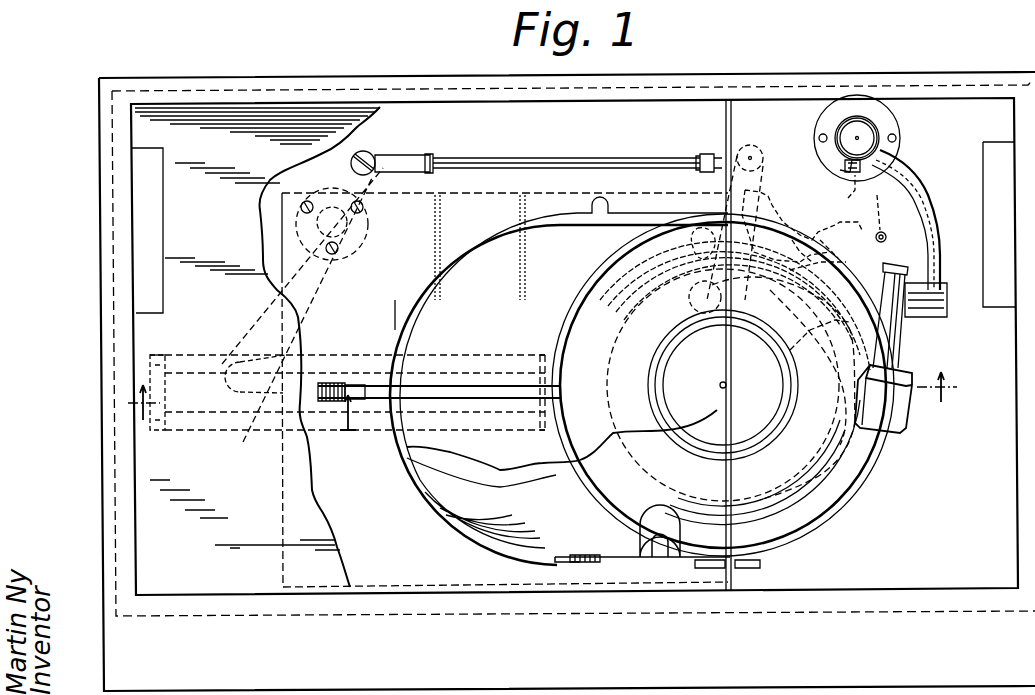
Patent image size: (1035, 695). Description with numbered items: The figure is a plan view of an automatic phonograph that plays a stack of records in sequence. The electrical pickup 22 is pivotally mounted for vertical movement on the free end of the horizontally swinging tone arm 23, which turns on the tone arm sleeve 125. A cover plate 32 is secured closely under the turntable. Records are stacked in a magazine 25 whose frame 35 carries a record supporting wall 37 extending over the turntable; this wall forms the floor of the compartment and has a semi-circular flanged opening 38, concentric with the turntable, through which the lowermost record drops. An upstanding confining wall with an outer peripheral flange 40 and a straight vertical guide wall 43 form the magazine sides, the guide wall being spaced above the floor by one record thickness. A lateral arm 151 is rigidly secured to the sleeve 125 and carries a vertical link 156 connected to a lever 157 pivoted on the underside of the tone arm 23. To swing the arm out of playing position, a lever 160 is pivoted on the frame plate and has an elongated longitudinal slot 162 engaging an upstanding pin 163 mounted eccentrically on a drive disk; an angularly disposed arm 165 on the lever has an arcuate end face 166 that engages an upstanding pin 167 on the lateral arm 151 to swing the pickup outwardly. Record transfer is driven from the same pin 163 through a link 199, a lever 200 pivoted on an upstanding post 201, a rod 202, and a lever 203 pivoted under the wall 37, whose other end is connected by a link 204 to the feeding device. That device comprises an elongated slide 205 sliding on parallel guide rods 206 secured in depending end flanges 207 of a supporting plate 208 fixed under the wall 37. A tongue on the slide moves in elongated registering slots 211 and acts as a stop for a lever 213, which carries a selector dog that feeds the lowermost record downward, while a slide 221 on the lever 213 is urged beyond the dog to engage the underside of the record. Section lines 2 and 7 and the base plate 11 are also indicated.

The section line 2 is at (136, 402).
The section line 7 is at (648, 414).
The base plate 11 is at (333, 568).
The electrical pickup 22 is at (893, 395).
The tone arm 23 is at (940, 256).
The magazine 25 is at (480, 249).
The cover plate 32 is at (949, 106).
The frame 35 is at (493, 199).
The record supporting wall 37 is at (550, 233).
The semi-circular flanged opening 38 is at (602, 281).
The outer peripheral flange 40 is at (402, 316).
The straight vertical guide wall 43 is at (735, 577).
The tone arm sleeve 125 is at (862, 122).
The lateral arm 151 is at (848, 198).
The vertical link 156 is at (845, 182).
The lever 157 is at (908, 318).
The lever 160 is at (835, 430).
The elongated longitudinal slot 162 is at (825, 265).
The upstanding pin 163 is at (833, 345).
The angularly disposed arm 165 is at (800, 243).
The arcuate end face 166 is at (818, 238).
The upstanding pin 167 is at (876, 238).
The link 199 is at (775, 325).
The lever 200 is at (802, 226).
The upstanding post 201 is at (705, 250).
The rod 202 is at (672, 160).
The lever 203 is at (348, 175).
The link 204 is at (302, 312).
The elongated slide 205 is at (238, 355).
The parallel guide rods 206 is at (198, 413).
The depending end flanges 207 is at (148, 385).
The supporting plate 208 is at (491, 355).
The elongated registering slots 211 is at (455, 384).
The lever 213 is at (362, 382).
The slide 221 is at (412, 384).